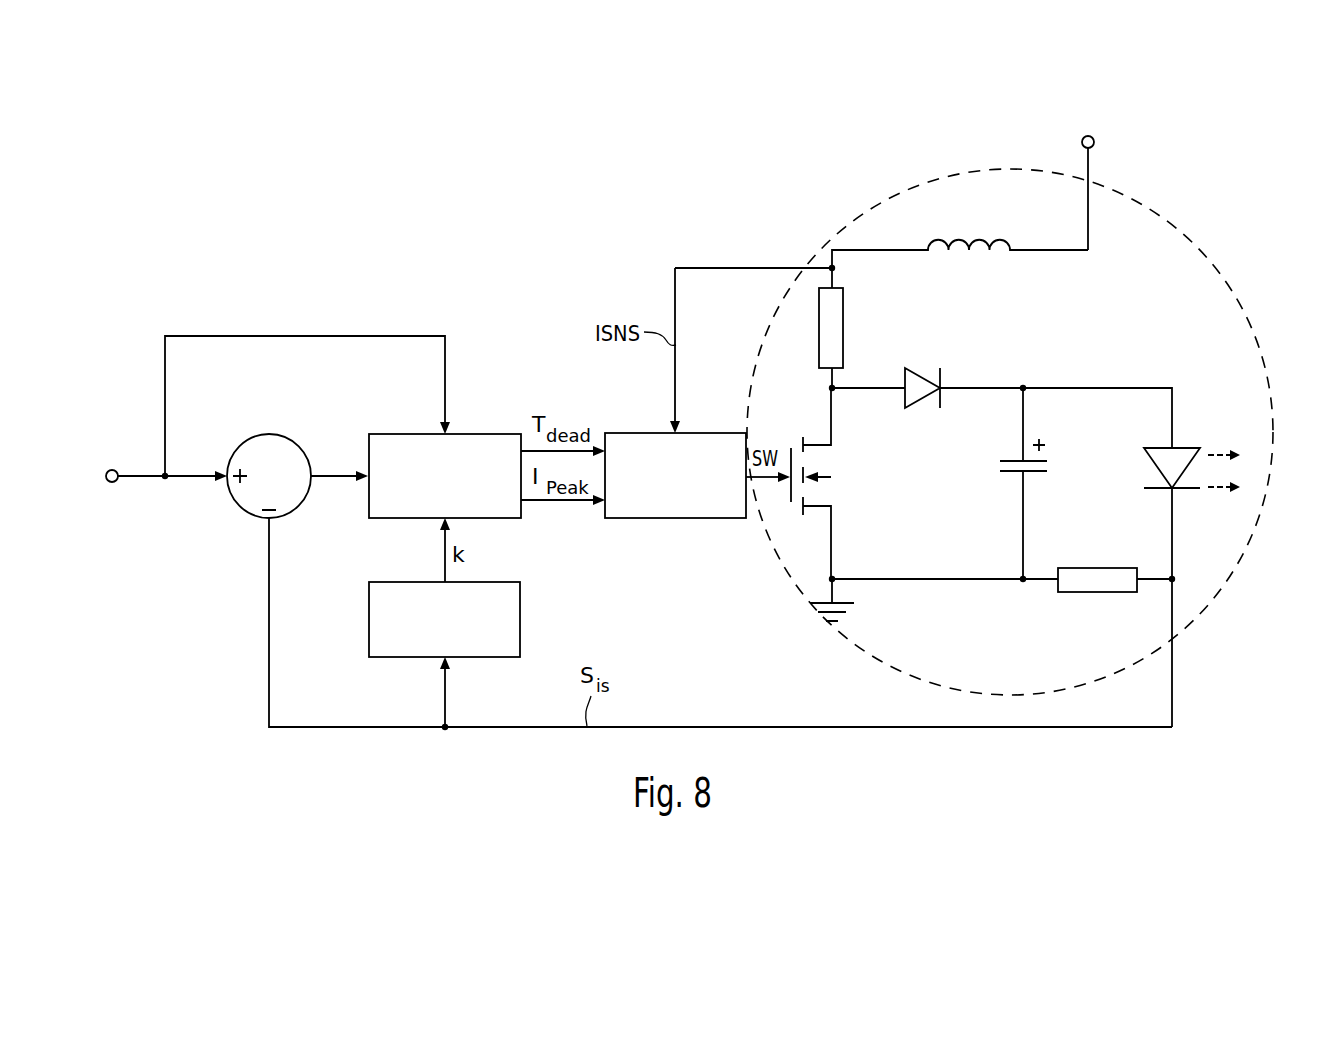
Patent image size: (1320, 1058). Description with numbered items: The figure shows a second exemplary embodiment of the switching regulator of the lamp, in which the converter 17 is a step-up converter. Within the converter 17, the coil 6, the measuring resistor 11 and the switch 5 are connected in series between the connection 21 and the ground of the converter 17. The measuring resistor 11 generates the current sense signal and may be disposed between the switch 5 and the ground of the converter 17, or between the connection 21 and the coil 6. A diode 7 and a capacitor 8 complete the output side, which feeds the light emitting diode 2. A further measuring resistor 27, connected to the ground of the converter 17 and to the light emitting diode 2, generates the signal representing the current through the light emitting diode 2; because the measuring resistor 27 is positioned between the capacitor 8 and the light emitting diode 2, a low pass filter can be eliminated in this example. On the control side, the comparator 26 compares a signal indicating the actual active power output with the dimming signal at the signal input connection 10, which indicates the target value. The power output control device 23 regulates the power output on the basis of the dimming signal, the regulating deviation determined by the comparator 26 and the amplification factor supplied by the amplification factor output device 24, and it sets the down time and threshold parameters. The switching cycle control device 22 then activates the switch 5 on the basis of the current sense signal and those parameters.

The light emitting diode 2 is at (1190, 445).
The switch 5 is at (835, 482).
The coil 6 is at (985, 236).
The diode 7 is at (920, 408).
The capacitor 8 is at (1047, 461).
The signal input connection 10 is at (112, 482).
The measuring resistor 11 is at (843, 330).
The converter 17 is at (1245, 318).
The connection 21 is at (1094, 139).
The switching cycle control device 22 is at (686, 518).
The power output control device 23 is at (490, 433).
The amplification factor output device 24 is at (520, 622).
The comparator 26 is at (300, 443).
The further measuring resistor 27 is at (1100, 567).